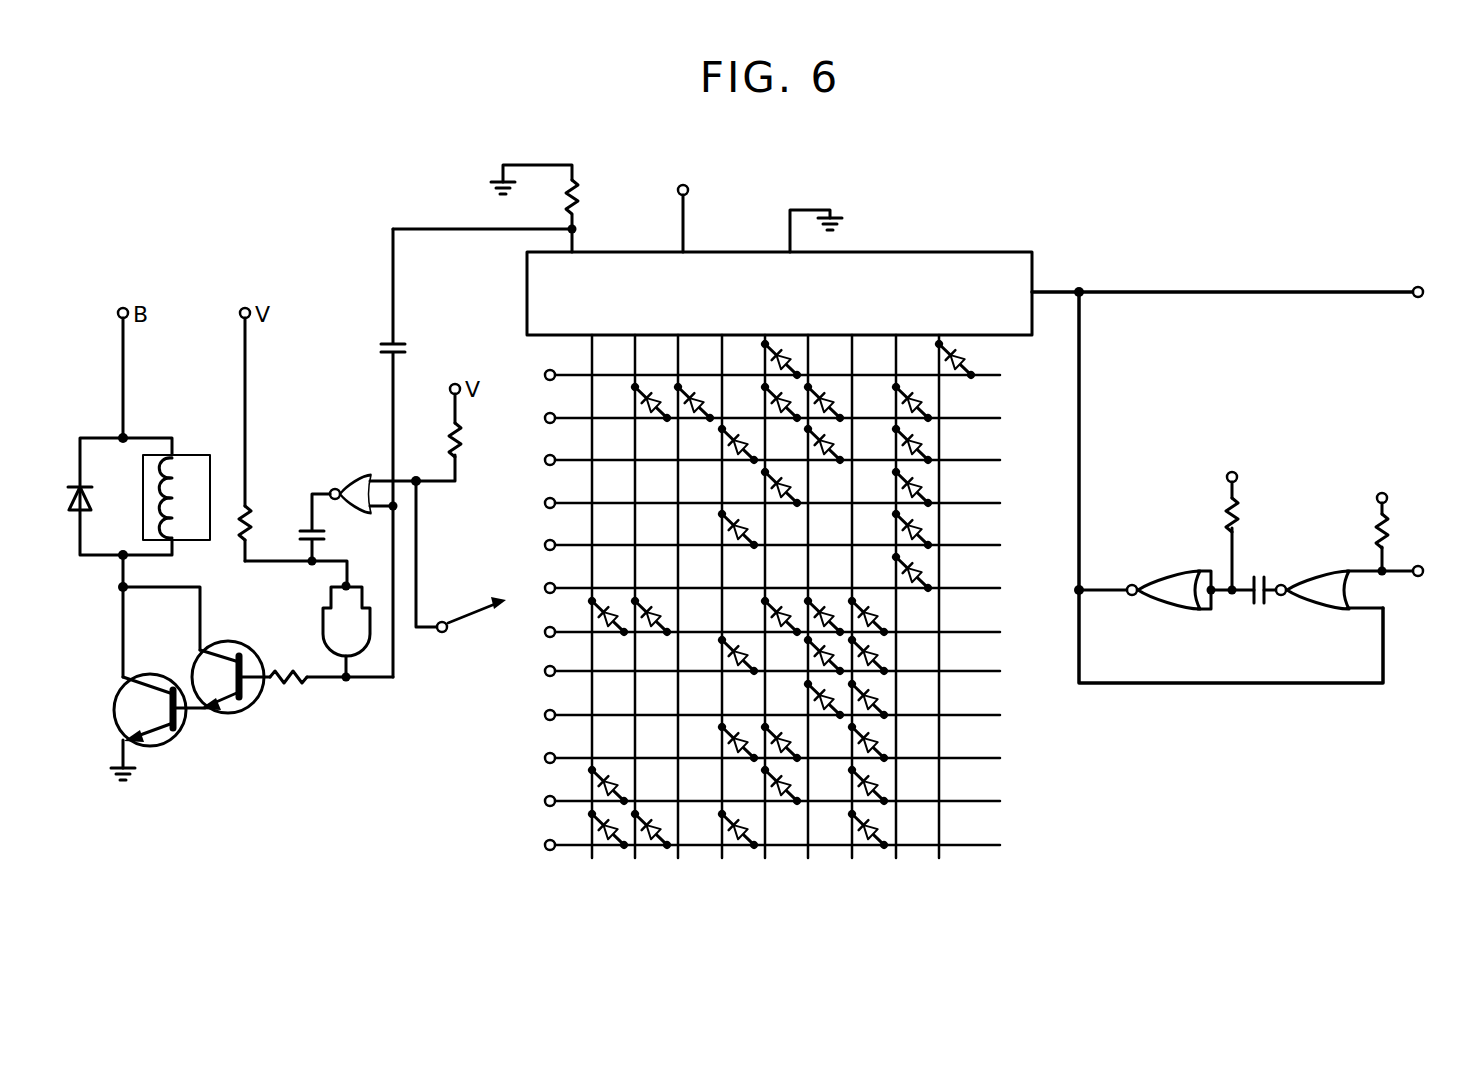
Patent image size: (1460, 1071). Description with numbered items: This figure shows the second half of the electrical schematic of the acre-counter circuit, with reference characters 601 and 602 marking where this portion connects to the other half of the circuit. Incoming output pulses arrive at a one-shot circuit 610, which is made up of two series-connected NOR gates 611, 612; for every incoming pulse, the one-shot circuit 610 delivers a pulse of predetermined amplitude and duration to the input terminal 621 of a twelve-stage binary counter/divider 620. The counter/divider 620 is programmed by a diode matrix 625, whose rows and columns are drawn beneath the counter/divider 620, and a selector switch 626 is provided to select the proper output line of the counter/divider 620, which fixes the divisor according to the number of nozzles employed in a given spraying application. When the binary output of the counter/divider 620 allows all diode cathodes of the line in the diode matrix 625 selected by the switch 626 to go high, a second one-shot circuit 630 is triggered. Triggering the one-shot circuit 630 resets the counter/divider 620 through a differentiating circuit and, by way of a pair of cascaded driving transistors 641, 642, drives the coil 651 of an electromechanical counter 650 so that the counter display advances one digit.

The connection reference character 601 is at (1418, 286).
The connection reference character 602 is at (1418, 577).
The one-shot circuit 610 is at (1246, 525).
The NOR gate 611 is at (1170, 582).
The NOR gate 612 is at (1292, 566).
The 12-stage binary counter/divider 620 is at (907, 250).
The input terminal 621 is at (1081, 289).
The diode matrix 625 is at (594, 875).
The selector switch 626 is at (467, 618).
The one-shot circuit 630 is at (311, 707).
The driving transistor 641 is at (177, 735).
The driving transistor 642 is at (232, 641).
The electromechanical counter 650 is at (209, 489).
The coil 651 is at (195, 545).